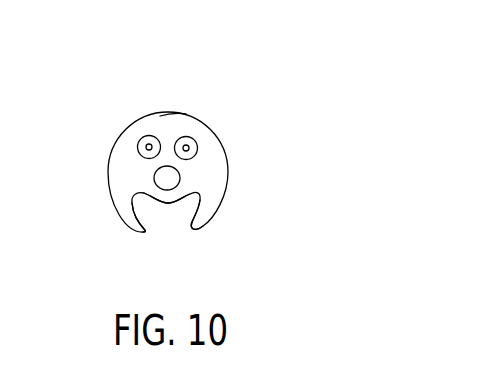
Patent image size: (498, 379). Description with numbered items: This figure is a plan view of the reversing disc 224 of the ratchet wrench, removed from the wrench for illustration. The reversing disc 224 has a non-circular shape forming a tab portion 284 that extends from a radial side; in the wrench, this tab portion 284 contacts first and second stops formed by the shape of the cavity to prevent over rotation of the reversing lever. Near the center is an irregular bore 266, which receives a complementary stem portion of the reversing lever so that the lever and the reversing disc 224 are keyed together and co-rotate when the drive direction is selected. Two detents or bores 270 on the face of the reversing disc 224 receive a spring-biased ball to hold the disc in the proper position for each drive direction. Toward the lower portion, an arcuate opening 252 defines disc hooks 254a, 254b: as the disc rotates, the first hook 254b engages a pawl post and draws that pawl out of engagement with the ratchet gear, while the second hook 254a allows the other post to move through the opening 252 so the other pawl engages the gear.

The reversing disc 224 is at (217, 143).
The detents 270 is at (177, 141).
The tab portion 284 is at (173, 113).
The irregular bore 266 is at (167, 175).
The arcuate opening 252 is at (173, 212).
The second hook 254a is at (198, 216).
The first hook 254b is at (136, 220).